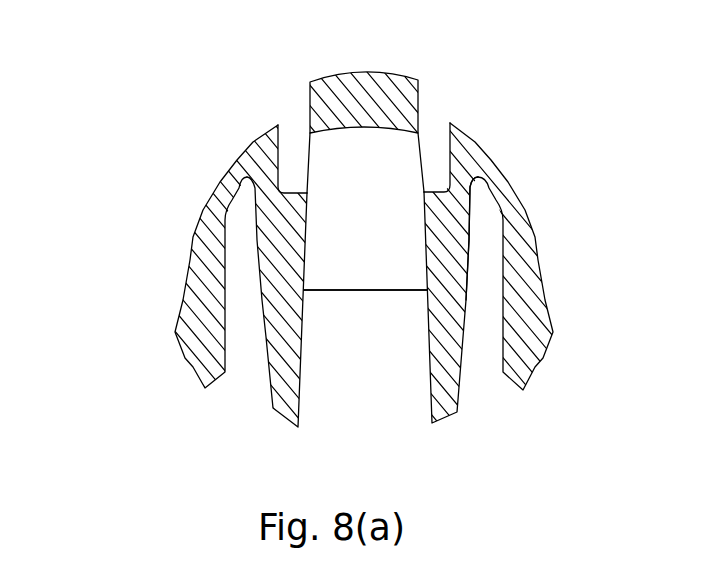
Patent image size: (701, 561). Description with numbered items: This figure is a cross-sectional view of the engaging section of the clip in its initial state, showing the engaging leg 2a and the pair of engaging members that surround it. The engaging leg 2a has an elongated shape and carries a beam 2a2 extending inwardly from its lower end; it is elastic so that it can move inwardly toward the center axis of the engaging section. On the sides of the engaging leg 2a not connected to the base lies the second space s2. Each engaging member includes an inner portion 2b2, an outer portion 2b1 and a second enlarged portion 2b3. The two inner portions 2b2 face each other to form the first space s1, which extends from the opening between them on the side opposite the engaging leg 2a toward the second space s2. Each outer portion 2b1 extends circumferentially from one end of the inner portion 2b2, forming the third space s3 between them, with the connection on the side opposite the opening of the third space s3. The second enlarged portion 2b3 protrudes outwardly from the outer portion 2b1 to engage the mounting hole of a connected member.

The engaging leg 2a is at (393, 84).
The beam 2a2 is at (365, 353).
The first space s1 is at (365, 334).
The second space s2 is at (297, 152).
The third space s3 is at (478, 273).
The outer portion 2b1 is at (193, 368).
The second enlarged portion 2b3 is at (350, 280).
The inner portion 2b2 is at (273, 408).